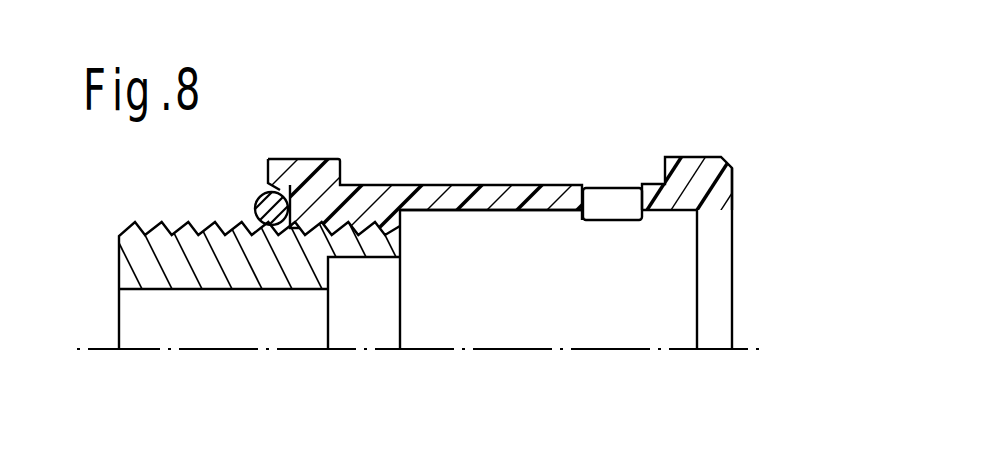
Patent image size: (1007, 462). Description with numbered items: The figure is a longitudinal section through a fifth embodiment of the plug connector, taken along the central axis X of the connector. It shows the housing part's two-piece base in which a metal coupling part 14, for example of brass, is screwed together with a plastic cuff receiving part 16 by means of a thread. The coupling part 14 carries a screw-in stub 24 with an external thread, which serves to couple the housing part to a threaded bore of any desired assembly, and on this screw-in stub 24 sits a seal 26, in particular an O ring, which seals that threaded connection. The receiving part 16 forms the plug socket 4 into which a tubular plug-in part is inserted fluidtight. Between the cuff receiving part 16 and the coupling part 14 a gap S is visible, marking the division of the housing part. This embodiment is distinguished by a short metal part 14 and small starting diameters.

The screw-in stub 24 is at (133, 262).
The coupling part 14 is at (223, 287).
The gap S is at (333, 228).
The receiving part 16 is at (400, 185).
The seal 26 is at (261, 199).
The plug socket 4 is at (410, 272).
The axis X is at (422, 349).